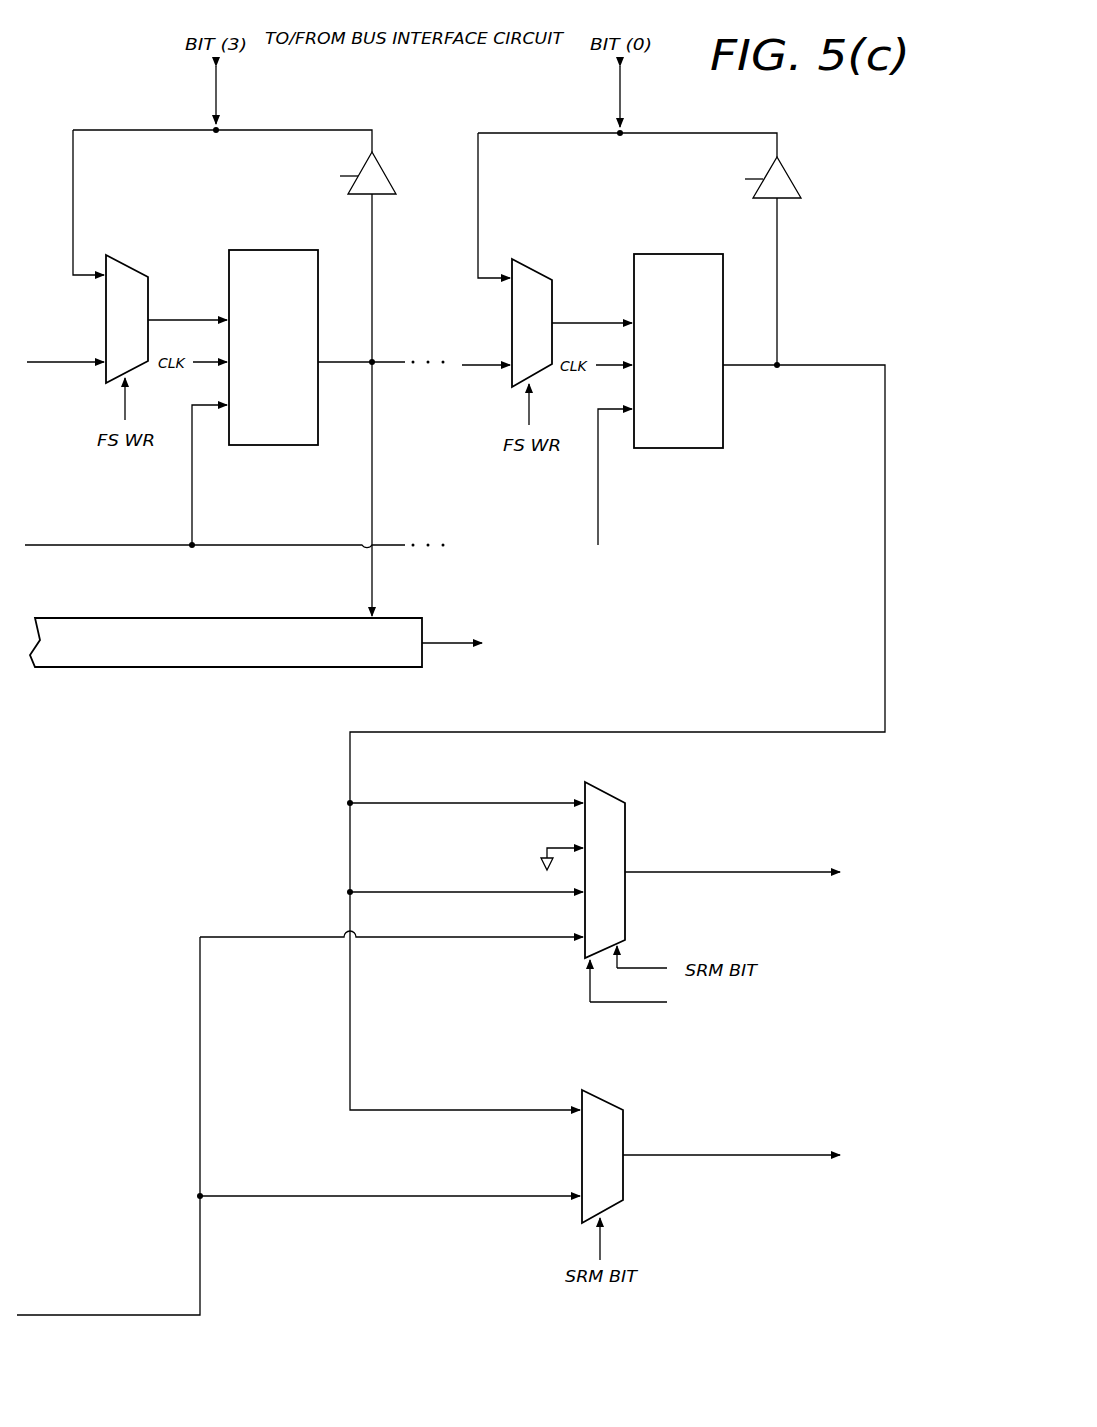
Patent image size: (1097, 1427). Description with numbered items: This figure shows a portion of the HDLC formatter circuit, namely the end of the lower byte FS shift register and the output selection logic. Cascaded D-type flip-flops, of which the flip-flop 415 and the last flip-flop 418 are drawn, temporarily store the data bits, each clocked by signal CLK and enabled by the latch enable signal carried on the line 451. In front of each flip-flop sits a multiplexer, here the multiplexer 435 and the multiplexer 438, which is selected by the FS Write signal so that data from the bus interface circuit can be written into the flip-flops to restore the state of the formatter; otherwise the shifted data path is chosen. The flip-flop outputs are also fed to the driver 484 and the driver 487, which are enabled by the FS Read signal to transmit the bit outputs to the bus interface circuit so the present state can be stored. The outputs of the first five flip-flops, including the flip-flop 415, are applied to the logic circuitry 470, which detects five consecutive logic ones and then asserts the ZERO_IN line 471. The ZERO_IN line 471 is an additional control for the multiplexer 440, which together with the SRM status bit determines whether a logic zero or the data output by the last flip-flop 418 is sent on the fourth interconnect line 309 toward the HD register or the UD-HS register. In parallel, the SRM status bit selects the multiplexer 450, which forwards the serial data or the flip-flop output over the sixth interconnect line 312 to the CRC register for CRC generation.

The multiplexer 435 is at (135, 265).
The multiplexer 438 is at (538, 272).
The driver 484 is at (385, 197).
The driver 487 is at (789, 200).
The D-type flip-flop 415 is at (277, 447).
The D-type flip-flop 418 is at (673, 450).
The line 451 is at (128, 540).
The logic circuitry 470 is at (128, 617).
The ZERO_IN line 471 is at (448, 647).
The multiplexer 440 is at (672, 820).
The multiplexer 450 is at (652, 1122).
The fourth interconnect line 309 is at (762, 873).
The sixth interconnect line 312 is at (780, 1155).